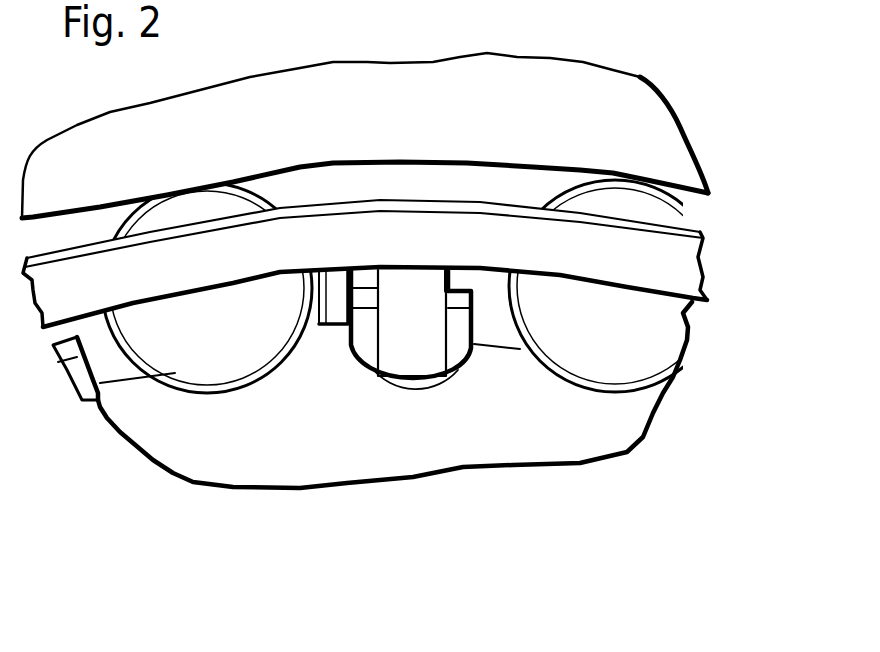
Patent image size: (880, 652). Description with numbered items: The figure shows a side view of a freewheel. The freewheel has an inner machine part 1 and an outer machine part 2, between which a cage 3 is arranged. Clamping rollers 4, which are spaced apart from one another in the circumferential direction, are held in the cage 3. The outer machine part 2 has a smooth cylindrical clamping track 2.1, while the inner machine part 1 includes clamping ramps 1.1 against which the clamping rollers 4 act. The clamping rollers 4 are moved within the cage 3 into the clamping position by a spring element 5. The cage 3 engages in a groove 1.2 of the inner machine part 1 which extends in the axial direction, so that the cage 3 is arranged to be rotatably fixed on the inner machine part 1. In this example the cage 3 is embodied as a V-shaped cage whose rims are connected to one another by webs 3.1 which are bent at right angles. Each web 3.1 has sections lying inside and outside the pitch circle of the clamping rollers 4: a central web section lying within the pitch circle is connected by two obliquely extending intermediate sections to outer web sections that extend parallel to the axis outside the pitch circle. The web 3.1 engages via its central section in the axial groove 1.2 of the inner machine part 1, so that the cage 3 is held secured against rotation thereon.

The inner machine part 1 is at (622, 429).
The clamping ramps 1.1 is at (311, 368).
The axial groove 1.2 is at (410, 384).
The outer machine part 2 is at (630, 97).
The clamping track 2.1 is at (388, 177).
The cage 3 is at (676, 272).
The web 3.1 is at (433, 350).
The clamping rollers 4 is at (175, 375).
The spring element 5 is at (338, 310).